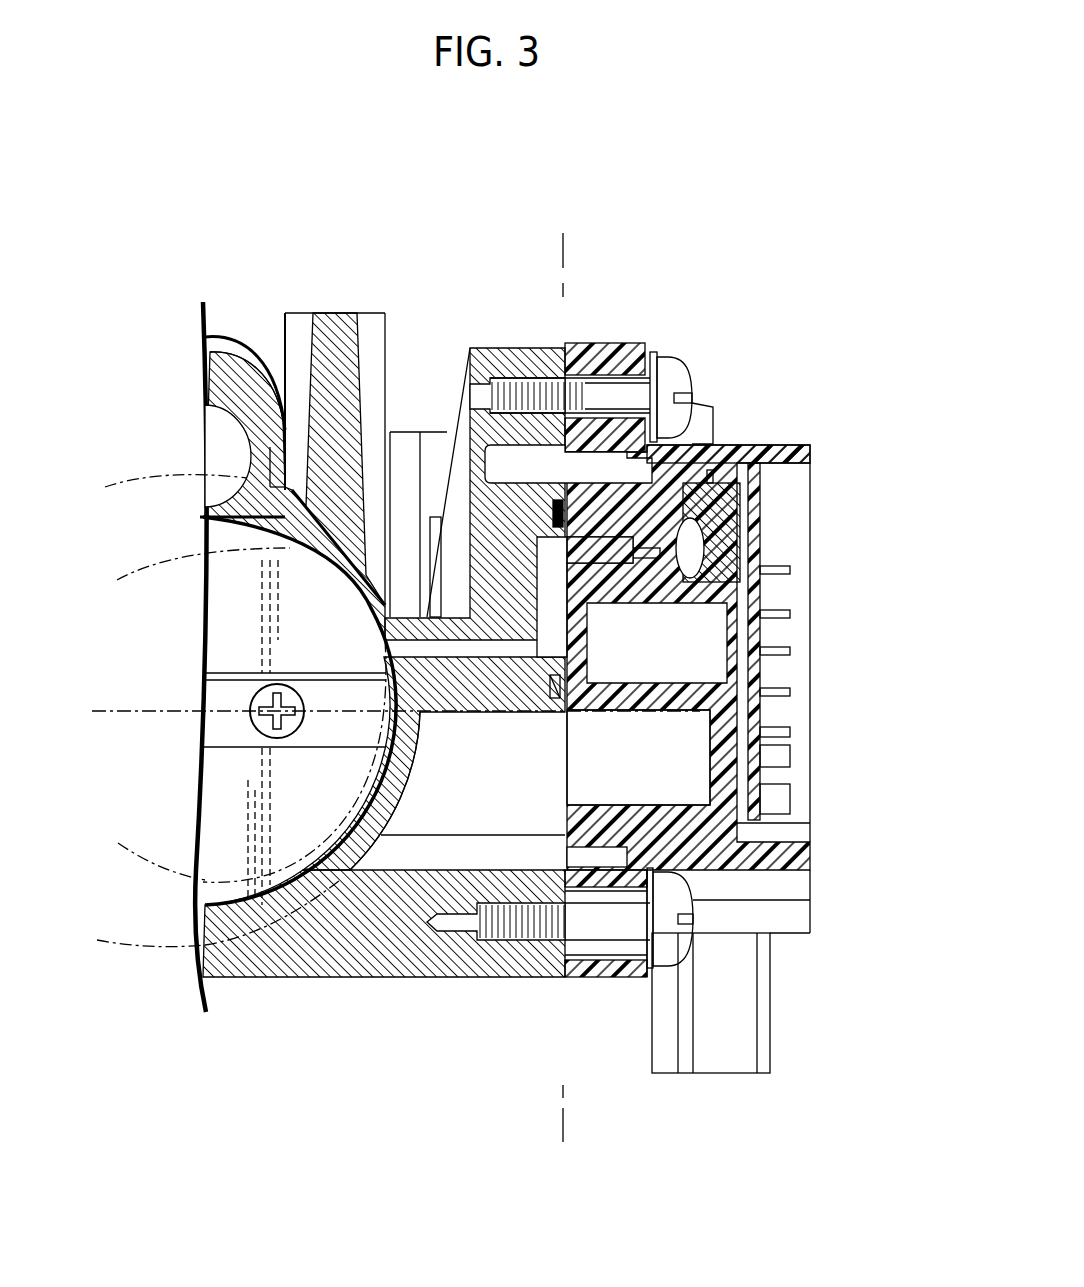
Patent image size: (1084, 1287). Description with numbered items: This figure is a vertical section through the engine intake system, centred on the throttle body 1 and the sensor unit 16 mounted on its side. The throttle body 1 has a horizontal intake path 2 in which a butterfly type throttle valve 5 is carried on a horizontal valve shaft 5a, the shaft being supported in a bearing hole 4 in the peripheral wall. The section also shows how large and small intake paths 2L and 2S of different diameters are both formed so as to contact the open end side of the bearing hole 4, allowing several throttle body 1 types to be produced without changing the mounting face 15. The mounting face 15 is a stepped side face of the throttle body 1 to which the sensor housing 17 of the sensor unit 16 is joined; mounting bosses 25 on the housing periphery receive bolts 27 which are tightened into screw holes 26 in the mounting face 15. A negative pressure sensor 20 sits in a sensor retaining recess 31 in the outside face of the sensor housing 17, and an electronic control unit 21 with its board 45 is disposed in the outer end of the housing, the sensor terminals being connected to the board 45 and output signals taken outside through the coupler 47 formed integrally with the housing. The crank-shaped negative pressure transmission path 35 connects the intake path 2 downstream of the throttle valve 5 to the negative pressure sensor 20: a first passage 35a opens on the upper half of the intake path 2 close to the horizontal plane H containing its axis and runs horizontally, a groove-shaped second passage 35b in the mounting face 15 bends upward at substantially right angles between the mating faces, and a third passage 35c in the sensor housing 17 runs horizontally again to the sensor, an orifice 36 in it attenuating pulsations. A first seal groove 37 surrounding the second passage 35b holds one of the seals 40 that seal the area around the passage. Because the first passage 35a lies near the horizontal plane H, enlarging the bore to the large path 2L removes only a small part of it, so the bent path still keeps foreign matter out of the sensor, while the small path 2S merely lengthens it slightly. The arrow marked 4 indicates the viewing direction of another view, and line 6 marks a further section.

The throttle body 1 is at (278, 955).
The intake path 2 is at (215, 890).
The large-diameter intake path 2L is at (167, 477).
The small-diameter intake path 2S is at (162, 555).
The bearing hole 4 is at (860, 702).
The throttle valve 5 is at (236, 810).
The valve shaft 5a is at (215, 692).
The section line 6 is at (540, 252).
The horizontal plane H is at (125, 708).
The mounting face 15 is at (574, 976).
The sensor unit 16 is at (774, 436).
The sensor housing 17 is at (716, 445).
The negative pressure sensor 20 is at (740, 497).
The electronic control unit 21 is at (780, 560).
The mounting boss 25 is at (603, 343).
The screw hole 26 is at (517, 385).
The bolt 27 is at (670, 368).
The sensor retaining recess 31 is at (706, 578).
The negative pressure transmission path 35 is at (484, 660).
The first passage 35a is at (437, 657).
The second passage 35b is at (540, 627).
The third passage 35c is at (606, 564).
The orifice 36 is at (632, 548).
The first seal groove 37 is at (557, 693).
The seal 40 is at (586, 692).
The board 45 is at (770, 632).
The coupler 47 is at (740, 1060).